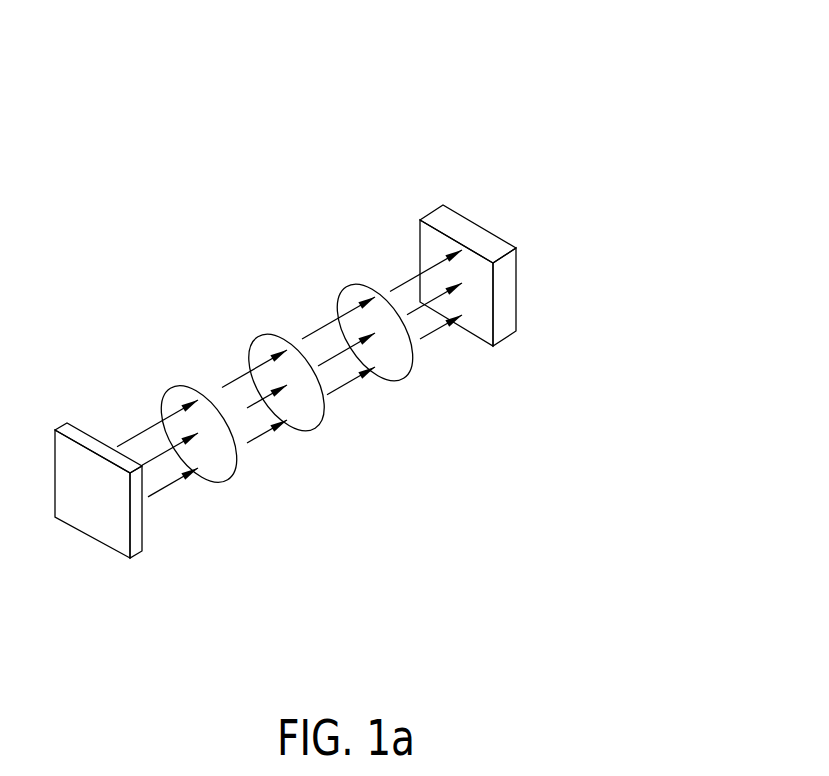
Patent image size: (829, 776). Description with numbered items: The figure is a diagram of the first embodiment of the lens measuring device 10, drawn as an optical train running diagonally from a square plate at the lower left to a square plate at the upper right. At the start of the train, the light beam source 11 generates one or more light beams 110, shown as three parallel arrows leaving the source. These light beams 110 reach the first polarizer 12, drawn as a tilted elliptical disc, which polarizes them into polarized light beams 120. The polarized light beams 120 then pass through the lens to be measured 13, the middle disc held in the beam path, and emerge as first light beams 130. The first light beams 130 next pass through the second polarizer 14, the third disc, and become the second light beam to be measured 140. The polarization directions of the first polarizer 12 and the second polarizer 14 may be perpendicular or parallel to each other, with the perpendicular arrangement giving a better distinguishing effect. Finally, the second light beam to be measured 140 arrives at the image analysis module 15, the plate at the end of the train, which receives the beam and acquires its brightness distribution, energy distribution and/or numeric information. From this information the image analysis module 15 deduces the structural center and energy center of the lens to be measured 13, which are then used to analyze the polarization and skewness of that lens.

The lens measuring device 10 is at (357, 160).
The light beam source 11 is at (65, 455).
The light beams 110 is at (143, 432).
The first polarizer 12 is at (198, 388).
The polarized light beams 120 is at (242, 377).
The lens to be measured 13 is at (308, 422).
The first light beams 130 is at (320, 331).
The second polarizer 14 is at (380, 374).
The second light beam to be measured 140 is at (407, 280).
The image analysis module 15 is at (468, 322).